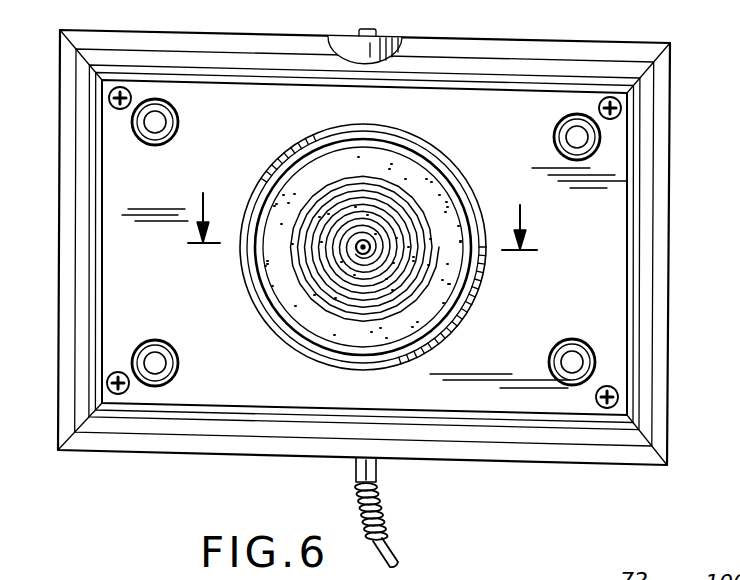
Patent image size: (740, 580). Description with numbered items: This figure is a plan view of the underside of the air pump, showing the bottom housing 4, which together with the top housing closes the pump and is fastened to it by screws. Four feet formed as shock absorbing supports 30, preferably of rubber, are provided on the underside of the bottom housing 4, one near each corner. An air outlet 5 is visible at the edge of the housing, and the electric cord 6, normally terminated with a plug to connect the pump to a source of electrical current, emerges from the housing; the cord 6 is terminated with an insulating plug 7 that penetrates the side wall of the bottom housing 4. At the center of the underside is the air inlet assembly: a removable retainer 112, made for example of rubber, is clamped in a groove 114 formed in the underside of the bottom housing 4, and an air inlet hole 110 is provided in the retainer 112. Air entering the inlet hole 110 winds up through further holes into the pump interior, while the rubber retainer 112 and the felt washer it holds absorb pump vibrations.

The bottom housing 4 is at (659, 336).
The air outlet 5 is at (391, 36).
The electric cord 6 is at (390, 551).
The insulating plug 7 is at (363, 204).
The shock absorbing supports 30 is at (600, 145).
The inlet hole 110 is at (370, 254).
The removable retainer 112 is at (302, 340).
The groove 114 is at (275, 309).